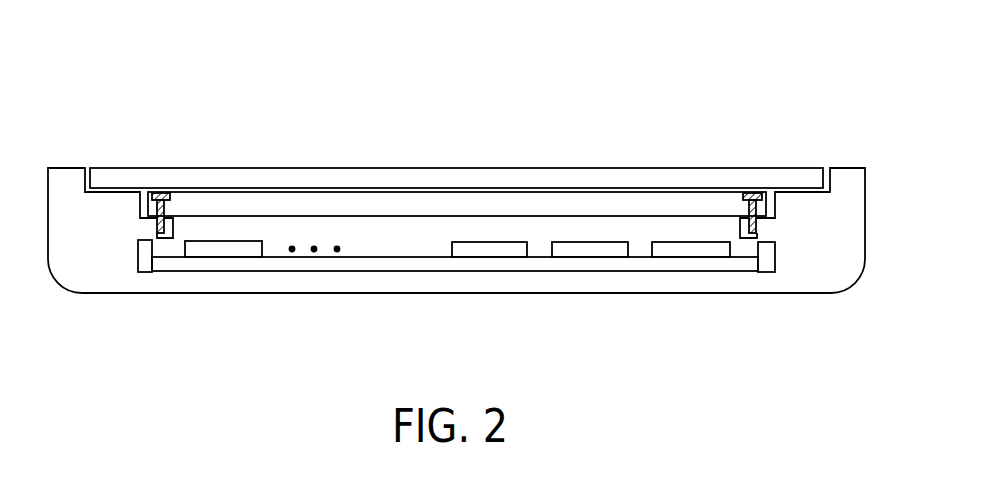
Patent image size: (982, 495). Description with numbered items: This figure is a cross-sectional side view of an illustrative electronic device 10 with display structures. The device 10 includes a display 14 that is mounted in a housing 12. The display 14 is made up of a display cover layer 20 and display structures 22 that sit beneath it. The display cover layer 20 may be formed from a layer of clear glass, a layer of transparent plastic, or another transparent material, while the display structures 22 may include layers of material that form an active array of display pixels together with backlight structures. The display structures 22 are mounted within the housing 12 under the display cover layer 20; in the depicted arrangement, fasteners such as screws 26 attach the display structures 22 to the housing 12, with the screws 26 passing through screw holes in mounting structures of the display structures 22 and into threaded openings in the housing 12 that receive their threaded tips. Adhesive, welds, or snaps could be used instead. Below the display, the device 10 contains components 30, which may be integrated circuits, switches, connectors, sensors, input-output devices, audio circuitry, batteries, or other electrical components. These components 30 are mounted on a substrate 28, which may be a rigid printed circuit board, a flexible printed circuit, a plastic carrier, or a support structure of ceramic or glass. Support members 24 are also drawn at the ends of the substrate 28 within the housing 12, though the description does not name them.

The electronic device 10 is at (735, 45).
The housing 12 is at (816, 280).
The display 14 is at (148, 146).
The display cover layer 20 is at (278, 176).
The display structures 22 is at (355, 203).
The support members 24 is at (150, 236).
The screws 26 is at (168, 203).
The substrate 28 is at (347, 258).
The components 30 is at (238, 255).